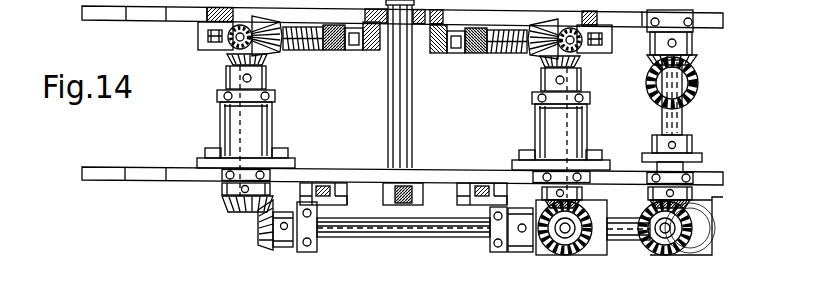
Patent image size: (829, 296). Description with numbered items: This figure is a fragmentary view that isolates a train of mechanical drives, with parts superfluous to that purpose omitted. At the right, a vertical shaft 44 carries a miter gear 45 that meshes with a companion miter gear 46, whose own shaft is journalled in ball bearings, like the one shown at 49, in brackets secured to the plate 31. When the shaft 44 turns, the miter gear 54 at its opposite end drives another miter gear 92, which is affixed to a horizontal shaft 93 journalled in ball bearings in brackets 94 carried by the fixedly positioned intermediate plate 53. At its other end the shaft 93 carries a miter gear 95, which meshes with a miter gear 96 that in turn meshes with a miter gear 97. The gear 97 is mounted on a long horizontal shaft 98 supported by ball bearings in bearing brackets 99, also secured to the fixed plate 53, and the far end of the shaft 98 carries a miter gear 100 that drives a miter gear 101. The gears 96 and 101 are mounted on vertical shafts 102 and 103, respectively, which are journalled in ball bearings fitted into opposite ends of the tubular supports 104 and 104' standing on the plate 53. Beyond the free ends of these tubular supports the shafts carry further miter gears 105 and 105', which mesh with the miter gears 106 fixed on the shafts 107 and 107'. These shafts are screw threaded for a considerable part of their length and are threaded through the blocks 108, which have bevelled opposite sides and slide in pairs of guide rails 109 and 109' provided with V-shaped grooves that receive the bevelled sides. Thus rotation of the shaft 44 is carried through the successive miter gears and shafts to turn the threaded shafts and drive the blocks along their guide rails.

The plate 31 is at (717, 22).
The intermediate plate 53 is at (703, 178).
The ball bearing 49 is at (697, 16).
The miter gear 45 is at (697, 61).
The miter gear 46 is at (699, 84).
The shaft 44 is at (684, 115).
The miter gear 54 is at (652, 200).
The miter gear 92 is at (694, 251).
The shaft 93 is at (626, 240).
The brackets 94 is at (600, 253).
The miter gear 95 is at (557, 254).
The miter gear 96 is at (543, 200).
The miter gear 97 is at (526, 250).
The shaft 98 is at (426, 231).
The bearing brackets 99 is at (309, 249).
The miter gear 100 is at (268, 240).
The miter gear 101 is at (222, 203).
The shaft 102 is at (548, 128).
The shaft 103 is at (262, 131).
The tubular support 104 is at (583, 115).
The tubular support 104' is at (226, 108).
The miter gear 105 is at (585, 67).
The miter gear 105' is at (224, 62).
The miter gear 106 is at (280, 50).
The shaft 107 is at (506, 62).
The shaft 107' is at (306, 61).
The block 108 is at (343, 52).
The guide rails 109 is at (420, 102).
The guide rails 109' is at (398, 59).